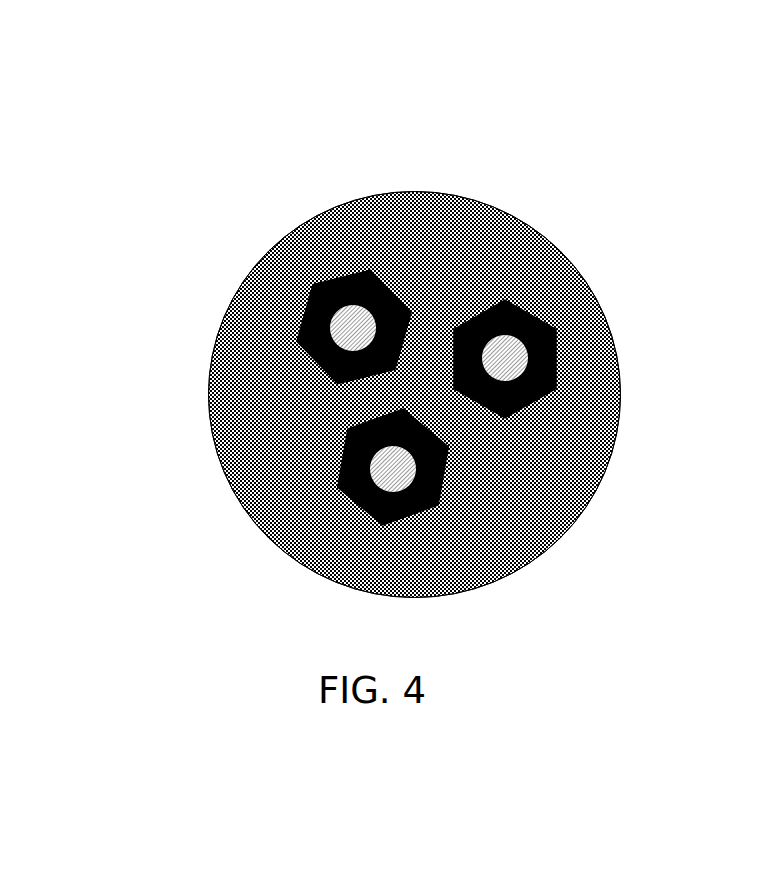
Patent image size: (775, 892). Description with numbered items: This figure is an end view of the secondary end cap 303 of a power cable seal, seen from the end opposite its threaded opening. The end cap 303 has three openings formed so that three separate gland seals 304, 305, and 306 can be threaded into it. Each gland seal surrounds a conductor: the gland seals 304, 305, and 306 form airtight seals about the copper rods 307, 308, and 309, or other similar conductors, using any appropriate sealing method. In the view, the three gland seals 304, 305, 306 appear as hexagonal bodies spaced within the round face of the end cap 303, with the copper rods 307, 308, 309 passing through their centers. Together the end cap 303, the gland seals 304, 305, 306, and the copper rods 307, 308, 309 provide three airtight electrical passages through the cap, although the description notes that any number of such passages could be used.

The secondary end cap 303 is at (415, 346).
The gland seal 304 is at (248, 282).
The gland seal 305 is at (338, 485).
The gland seal 306 is at (553, 394).
The copper rod 307 is at (318, 281).
The copper rod 308 is at (365, 520).
The copper rod 309 is at (560, 330).